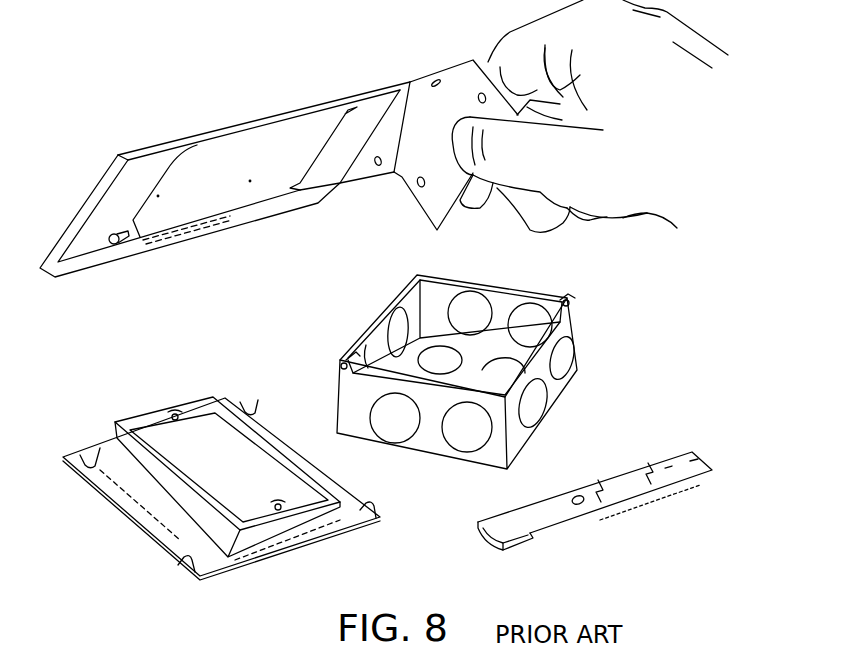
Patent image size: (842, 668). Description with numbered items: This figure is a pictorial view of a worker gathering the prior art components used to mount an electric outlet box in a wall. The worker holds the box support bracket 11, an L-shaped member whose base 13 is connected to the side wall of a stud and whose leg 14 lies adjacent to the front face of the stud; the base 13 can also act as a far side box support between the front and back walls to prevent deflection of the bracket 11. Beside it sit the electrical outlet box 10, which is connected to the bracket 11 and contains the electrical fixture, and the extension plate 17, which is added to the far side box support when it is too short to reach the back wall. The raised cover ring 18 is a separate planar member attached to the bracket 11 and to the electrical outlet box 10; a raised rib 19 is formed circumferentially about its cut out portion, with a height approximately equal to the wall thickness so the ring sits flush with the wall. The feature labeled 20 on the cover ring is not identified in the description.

The electrical outlet box 10 is at (594, 309).
The box support bracket 11 is at (170, 130).
The base of the L (far side box support) 13 is at (428, 160).
The leg of the L 14 is at (427, 76).
The extension plate 17 is at (628, 464).
The raised cover ring 18 is at (205, 474).
The raised rib 19 is at (145, 440).
The raised ring 20 is at (205, 512).